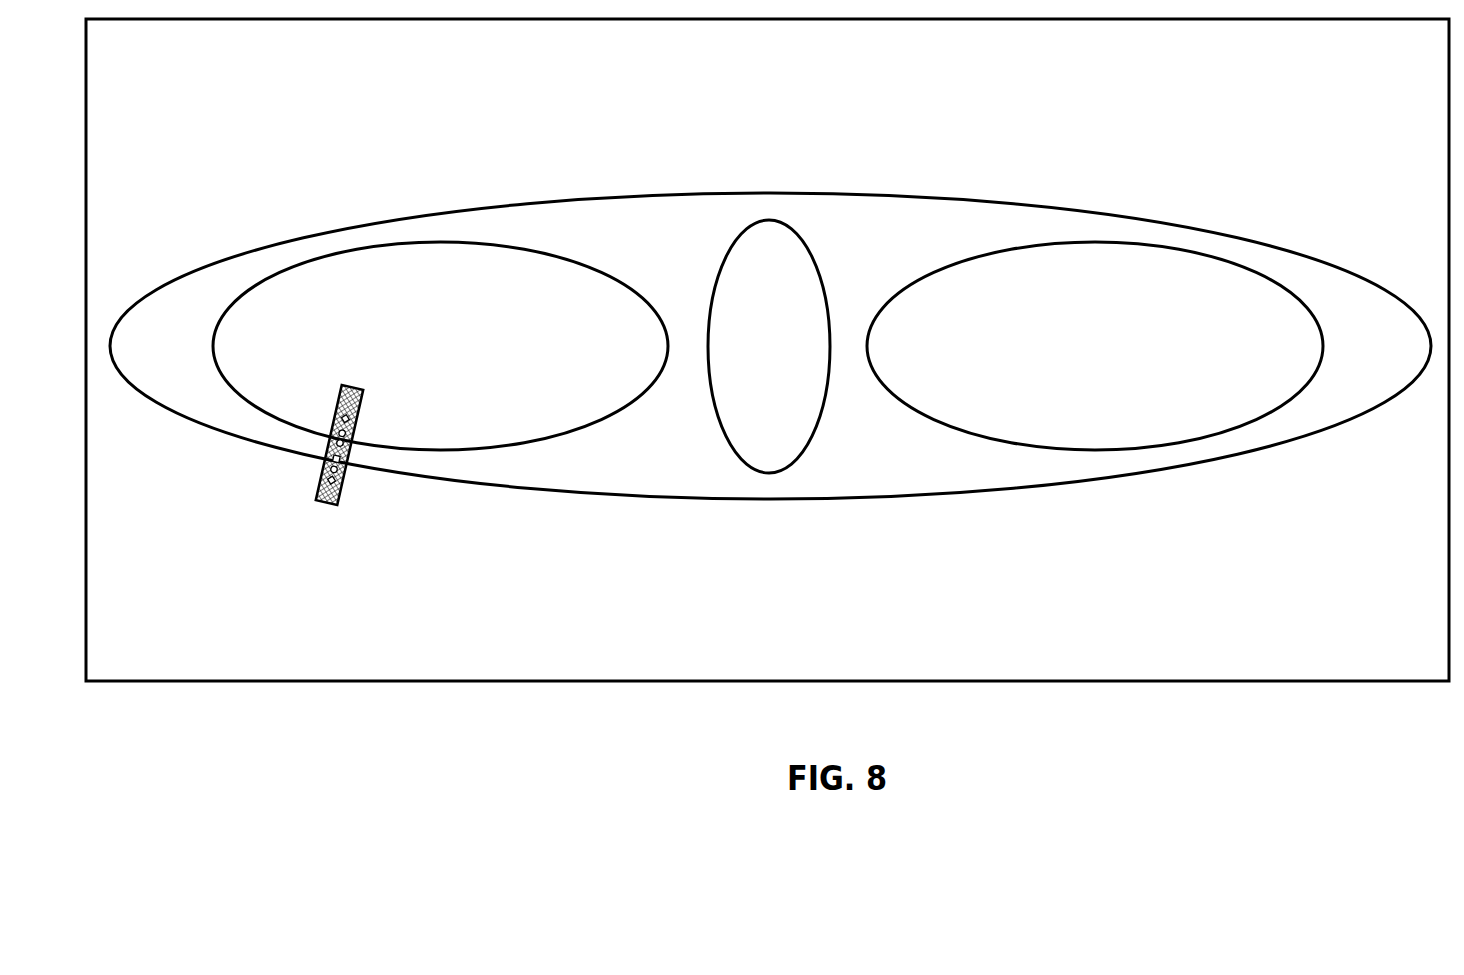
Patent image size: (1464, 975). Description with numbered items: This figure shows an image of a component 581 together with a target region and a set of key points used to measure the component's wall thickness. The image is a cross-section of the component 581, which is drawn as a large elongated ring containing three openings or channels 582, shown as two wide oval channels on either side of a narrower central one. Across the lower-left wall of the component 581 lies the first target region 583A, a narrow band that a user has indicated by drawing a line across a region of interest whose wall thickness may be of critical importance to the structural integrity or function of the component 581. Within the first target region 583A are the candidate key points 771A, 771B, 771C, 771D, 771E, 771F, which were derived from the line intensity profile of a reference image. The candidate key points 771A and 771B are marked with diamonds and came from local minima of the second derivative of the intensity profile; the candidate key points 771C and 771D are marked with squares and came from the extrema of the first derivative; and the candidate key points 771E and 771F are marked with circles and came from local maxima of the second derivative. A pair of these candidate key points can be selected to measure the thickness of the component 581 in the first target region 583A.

The component 581 is at (287, 242).
The openings or channels 582 is at (587, 428).
The first target region 583A is at (313, 498).
The candidate key point 771A is at (340, 495).
The candidate key point 771B is at (352, 418).
The candidate key point 771C is at (343, 475).
The candidate key point 771D is at (350, 432).
The candidate key point 771E is at (348, 463).
The candidate key point 771F is at (346, 447).